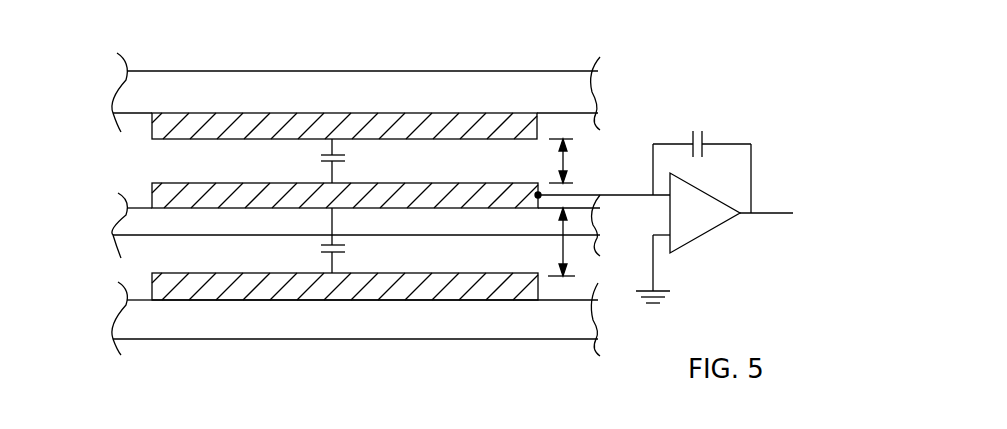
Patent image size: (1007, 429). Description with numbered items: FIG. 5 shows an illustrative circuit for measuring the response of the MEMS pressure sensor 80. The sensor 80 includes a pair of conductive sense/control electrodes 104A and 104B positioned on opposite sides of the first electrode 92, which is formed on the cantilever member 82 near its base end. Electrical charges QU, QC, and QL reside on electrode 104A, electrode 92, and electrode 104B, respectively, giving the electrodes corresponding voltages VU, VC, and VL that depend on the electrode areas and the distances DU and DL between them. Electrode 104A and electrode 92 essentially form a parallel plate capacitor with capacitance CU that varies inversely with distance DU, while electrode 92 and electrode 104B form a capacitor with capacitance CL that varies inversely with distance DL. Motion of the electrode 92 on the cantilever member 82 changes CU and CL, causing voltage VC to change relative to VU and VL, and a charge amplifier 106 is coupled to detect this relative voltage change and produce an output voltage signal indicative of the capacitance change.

The MEMS pressure sensor 80 is at (455, 53).
The cantilever member 82 is at (147, 235).
The first electrode 92 is at (160, 182).
The conductive sense/control electrode 104A is at (253, 114).
The conductive sense/control electrode 104B is at (258, 300).
The charge amplifier 106 is at (710, 108).